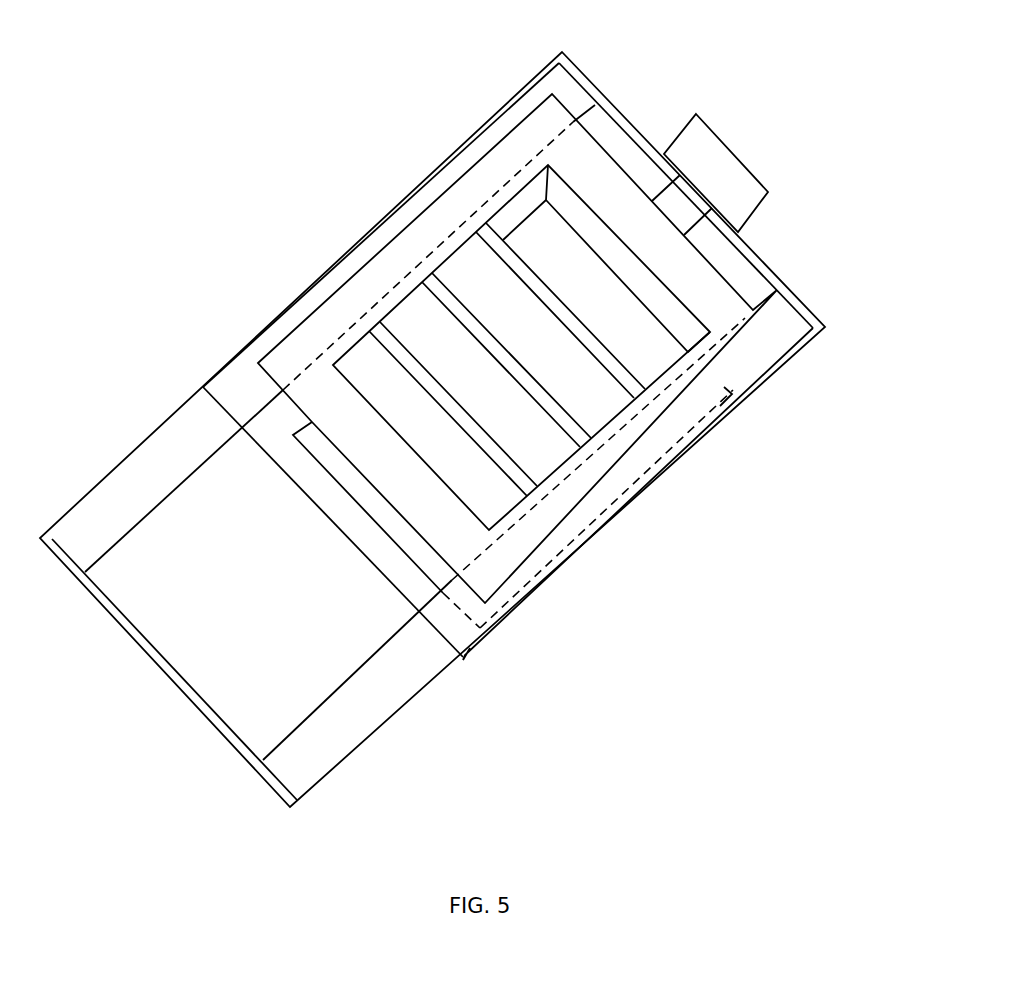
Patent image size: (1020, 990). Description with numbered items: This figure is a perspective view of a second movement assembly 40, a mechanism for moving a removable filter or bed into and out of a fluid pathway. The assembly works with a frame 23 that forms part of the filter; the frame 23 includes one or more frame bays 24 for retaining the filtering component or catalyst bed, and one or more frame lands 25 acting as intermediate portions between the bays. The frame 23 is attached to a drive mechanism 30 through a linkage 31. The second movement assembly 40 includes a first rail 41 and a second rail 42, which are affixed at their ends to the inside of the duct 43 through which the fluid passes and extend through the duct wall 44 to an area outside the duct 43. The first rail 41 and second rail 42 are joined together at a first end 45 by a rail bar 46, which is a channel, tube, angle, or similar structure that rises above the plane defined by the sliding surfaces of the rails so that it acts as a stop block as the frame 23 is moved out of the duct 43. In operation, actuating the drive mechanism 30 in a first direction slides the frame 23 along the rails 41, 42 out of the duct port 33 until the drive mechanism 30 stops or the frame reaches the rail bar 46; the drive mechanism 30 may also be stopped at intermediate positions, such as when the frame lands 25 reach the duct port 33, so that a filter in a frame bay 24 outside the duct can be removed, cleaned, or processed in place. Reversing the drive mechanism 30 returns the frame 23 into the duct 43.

The second movement assembly 40 is at (471, 63).
The first rail 41 is at (315, 298).
The second rail 42 is at (520, 605).
The duct 43 is at (370, 232).
The duct wall 44 is at (203, 387).
The first end 45 is at (200, 668).
The rail bar 46 is at (243, 756).
The duct port 33 is at (405, 613).
The frame 23 is at (588, 157).
The frame bay 24 is at (525, 447).
The frame land 25 is at (568, 406).
The drive mechanism 30 is at (768, 156).
The linkage 31 is at (686, 229).